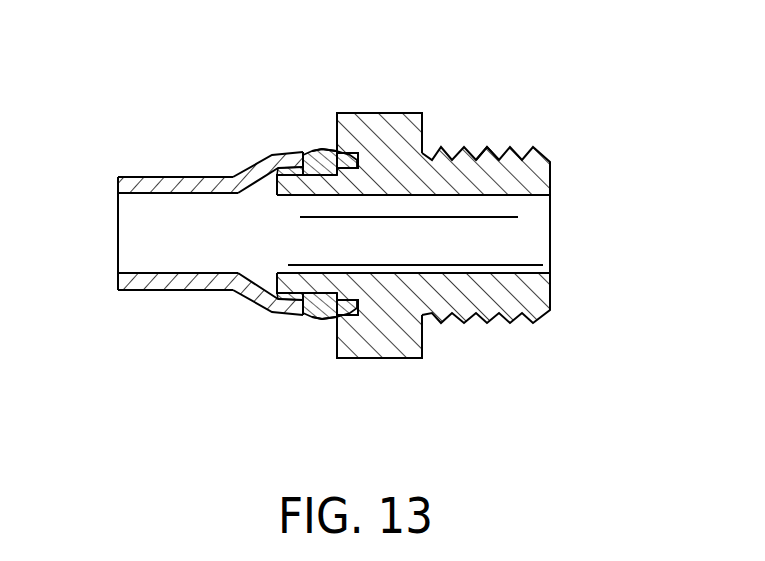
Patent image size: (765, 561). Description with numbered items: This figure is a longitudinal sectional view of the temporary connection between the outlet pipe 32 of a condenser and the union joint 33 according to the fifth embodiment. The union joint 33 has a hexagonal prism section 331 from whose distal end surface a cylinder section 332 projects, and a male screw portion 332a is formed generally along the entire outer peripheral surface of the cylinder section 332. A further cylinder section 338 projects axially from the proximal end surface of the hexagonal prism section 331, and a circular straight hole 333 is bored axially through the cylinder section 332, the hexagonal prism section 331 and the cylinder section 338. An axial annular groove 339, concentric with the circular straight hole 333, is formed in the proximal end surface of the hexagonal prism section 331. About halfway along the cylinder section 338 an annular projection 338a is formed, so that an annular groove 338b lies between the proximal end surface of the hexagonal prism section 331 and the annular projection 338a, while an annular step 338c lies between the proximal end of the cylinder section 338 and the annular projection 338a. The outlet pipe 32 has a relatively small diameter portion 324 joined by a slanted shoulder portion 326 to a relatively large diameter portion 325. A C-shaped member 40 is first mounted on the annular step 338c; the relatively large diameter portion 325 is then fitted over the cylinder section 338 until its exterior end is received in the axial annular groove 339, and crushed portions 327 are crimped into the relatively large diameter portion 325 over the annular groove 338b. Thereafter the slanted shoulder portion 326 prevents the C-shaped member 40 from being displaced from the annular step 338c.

The outlet pipe 32 is at (165, 183).
The relatively small diameter portion 324 is at (140, 182).
The relatively large diameter portion 325 is at (292, 153).
The slanted shoulder portion 326 is at (262, 168).
The crushed portions 327 is at (300, 312).
The union joint 33 is at (403, 375).
The hexagonal prism section 331 is at (350, 353).
The cylinder section 332 is at (517, 315).
The male screw portion 332a is at (492, 153).
The circular straight hole 333 is at (518, 197).
The cylinder section 338 is at (300, 266).
The annular projection 338a is at (317, 145).
The annular groove 338b is at (297, 320).
The annular step 338c is at (247, 290).
The axial annular groove 339 is at (357, 152).
The C-shaped member 40 is at (290, 305).